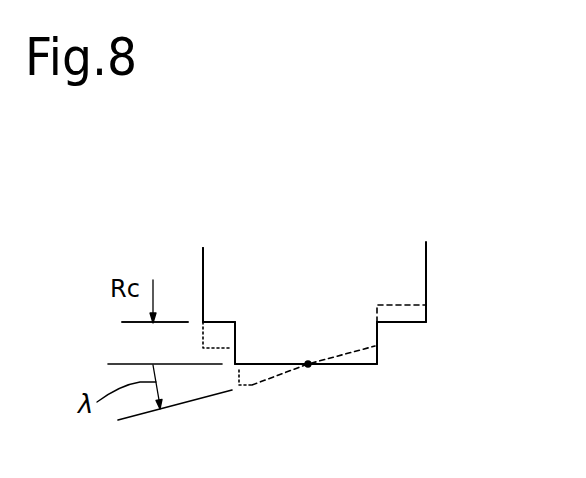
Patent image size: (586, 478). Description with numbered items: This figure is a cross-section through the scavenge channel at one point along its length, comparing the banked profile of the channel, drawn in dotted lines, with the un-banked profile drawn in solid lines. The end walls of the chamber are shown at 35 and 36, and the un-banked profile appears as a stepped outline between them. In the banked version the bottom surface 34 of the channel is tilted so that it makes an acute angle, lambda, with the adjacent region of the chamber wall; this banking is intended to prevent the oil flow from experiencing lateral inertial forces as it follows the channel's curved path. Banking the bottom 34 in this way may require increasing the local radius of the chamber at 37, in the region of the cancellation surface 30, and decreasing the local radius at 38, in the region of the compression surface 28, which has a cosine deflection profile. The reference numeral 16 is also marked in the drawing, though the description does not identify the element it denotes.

The rotor blade tip / reference surface 16 is at (178, 322).
The compression surface 28 is at (376, 305).
The cancellation surface 30 is at (240, 372).
The bottom surface of the channel 34 is at (283, 372).
The end wall of the chamber 35 is at (203, 258).
The end wall of the chamber 36 is at (427, 278).
The region of increased local chamber radius 37 is at (217, 348).
The region of decreased local chamber radius 38 is at (407, 297).